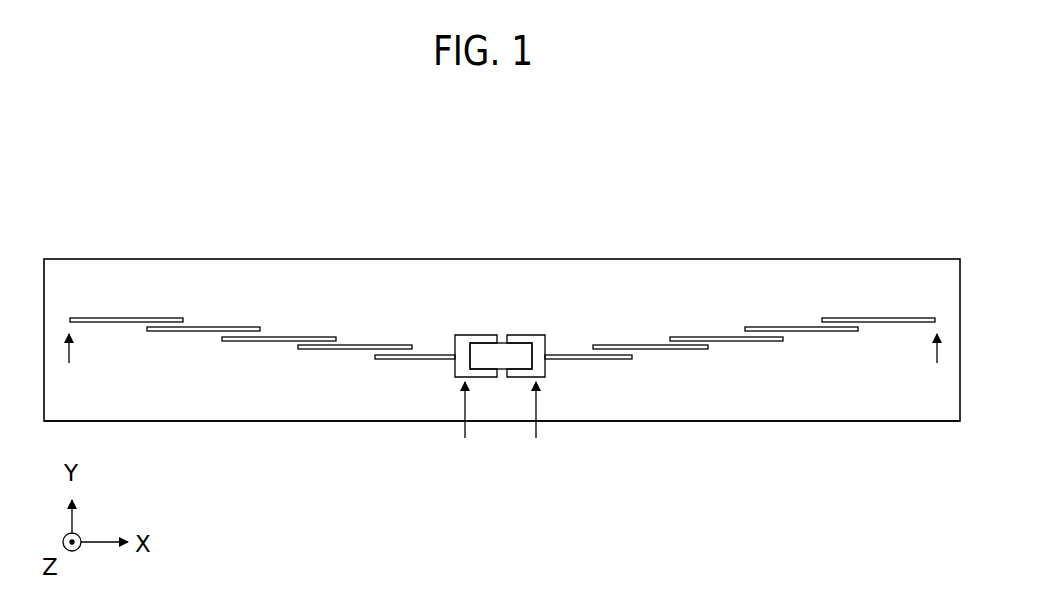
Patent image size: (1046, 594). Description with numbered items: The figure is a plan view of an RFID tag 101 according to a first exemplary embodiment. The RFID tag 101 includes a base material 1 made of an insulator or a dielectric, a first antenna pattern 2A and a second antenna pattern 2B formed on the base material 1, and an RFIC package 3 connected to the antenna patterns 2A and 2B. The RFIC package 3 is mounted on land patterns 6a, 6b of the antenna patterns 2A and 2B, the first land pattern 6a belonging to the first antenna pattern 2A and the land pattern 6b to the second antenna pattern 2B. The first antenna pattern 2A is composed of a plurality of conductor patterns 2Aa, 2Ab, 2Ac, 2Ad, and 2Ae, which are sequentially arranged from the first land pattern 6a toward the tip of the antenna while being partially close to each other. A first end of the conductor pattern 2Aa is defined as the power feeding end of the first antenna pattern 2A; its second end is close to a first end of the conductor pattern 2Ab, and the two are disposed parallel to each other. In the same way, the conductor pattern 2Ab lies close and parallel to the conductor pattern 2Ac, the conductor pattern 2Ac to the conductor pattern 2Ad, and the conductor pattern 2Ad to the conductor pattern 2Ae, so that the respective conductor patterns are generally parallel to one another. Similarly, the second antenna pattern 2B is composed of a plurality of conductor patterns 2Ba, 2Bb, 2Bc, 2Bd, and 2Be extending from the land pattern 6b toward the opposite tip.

The RFID tag 101 is at (590, 136).
The base material 1 is at (756, 400).
The first antenna pattern 2A is at (457, 210).
The second antenna pattern 2B is at (906, 210).
The conductor pattern 2Aa is at (426, 355).
The conductor pattern 2Ab is at (362, 345).
The conductor pattern 2Ac is at (286, 337).
The conductor pattern 2Ad is at (210, 327).
The conductor pattern 2Ae is at (130, 318).
The conductor pattern 2Ba is at (579, 355).
The conductor pattern 2Bb is at (645, 345).
The conductor pattern 2Bc is at (725, 337).
The conductor pattern 2Bd is at (800, 327).
The conductor pattern 2Be is at (878, 318).
The RFIC package 3 is at (501, 343).
The first land pattern 6a is at (466, 337).
The land pattern 6b is at (536, 337).